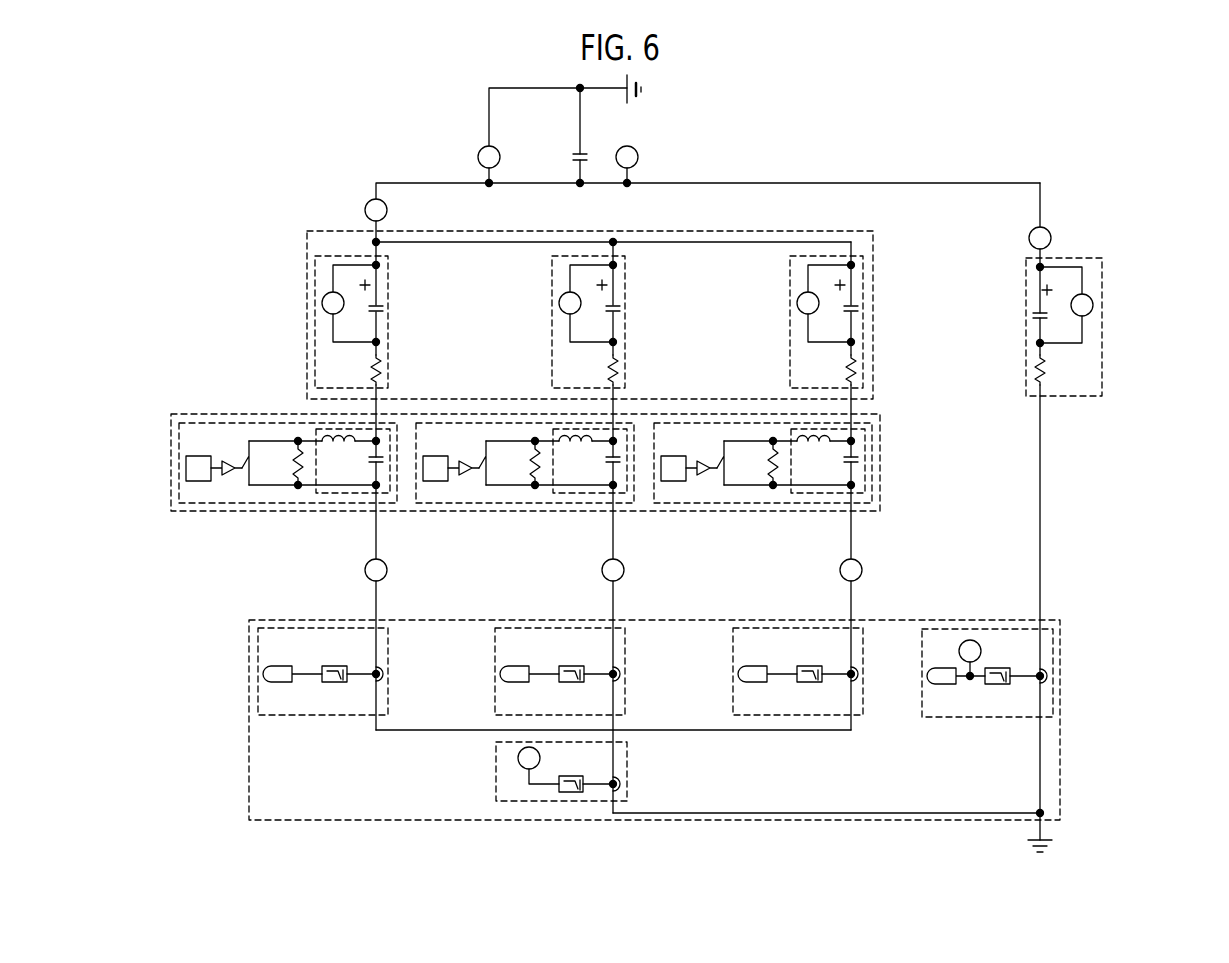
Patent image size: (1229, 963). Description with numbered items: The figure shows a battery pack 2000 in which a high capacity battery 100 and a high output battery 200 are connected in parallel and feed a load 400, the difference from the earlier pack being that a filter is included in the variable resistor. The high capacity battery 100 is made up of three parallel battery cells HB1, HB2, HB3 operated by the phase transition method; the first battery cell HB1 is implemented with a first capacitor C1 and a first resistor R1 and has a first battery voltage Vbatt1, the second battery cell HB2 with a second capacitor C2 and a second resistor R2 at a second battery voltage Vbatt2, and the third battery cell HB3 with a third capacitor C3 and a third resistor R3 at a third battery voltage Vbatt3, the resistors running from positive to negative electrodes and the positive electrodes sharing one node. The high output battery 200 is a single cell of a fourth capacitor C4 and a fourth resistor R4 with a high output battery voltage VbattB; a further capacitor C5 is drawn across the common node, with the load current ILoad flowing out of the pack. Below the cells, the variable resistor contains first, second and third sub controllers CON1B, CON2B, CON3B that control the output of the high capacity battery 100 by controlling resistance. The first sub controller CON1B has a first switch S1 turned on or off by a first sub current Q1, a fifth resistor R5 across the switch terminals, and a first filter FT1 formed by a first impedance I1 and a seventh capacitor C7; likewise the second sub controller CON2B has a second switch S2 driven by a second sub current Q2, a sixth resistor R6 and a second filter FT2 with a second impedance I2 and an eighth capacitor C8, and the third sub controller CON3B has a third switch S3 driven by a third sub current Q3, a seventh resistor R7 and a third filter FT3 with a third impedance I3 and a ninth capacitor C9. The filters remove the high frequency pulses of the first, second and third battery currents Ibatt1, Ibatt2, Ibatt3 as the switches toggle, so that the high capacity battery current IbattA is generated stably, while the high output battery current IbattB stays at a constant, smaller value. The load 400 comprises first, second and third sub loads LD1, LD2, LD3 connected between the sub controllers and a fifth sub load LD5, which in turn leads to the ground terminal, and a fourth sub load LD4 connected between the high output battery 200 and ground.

The battery pack 2000 is at (1120, 104).
The high capacity battery 100 is at (875, 276).
The high output battery 200 is at (1101, 327).
The load 400 is at (1062, 643).
The first battery cell HB1 is at (314, 322).
The second battery cell HB2 is at (551, 322).
The third battery cell HB3 is at (789, 322).
The first sub controller CON1B is at (288, 489).
The second sub controller CON2B is at (525, 489).
The third sub controller CON3B is at (763, 489).
The first filter FT1 is at (353, 492).
The second filter FT2 is at (590, 492).
The third filter FT3 is at (828, 492).
The first sub load LD1 is at (323, 651).
The second sub load LD2 is at (560, 651).
The third sub load LD3 is at (798, 651).
The fourth sub load LD4 is at (987, 652).
The fifth sub load LD5 is at (514, 798).
The first sub current Q1 is at (198, 468).
The second sub current Q2 is at (435, 468).
The third sub current Q3 is at (673, 468).
The first switch S1 is at (256, 463).
The second switch S2 is at (493, 463).
The third switch S3 is at (731, 463).
The first resistor R1 is at (364, 370).
The second resistor R2 is at (601, 370).
The third resistor R3 is at (839, 370).
The fourth resistor R4 is at (1053, 370).
The fifth resistor R5 is at (286, 463).
The sixth resistor R6 is at (523, 463).
The seventh resistor R7 is at (761, 463).
The first capacitor C1 is at (368, 319).
The second capacitor C2 is at (605, 319).
The third capacitor C3 is at (843, 319).
The fourth capacitor C4 is at (1049, 323).
The fifth capacitor C5 is at (570, 158).
The seventh capacitor C7 is at (366, 470).
The eighth capacitor C8 is at (603, 470).
The ninth capacitor C9 is at (841, 470).
The first impedance I1 is at (338, 452).
The second impedance I2 is at (575, 452).
The third impedance I3 is at (813, 452).
The first battery voltage Vbatt1 is at (322, 303).
The second battery voltage Vbatt2 is at (559, 303).
The third battery voltage Vbatt3 is at (797, 303).
The high output battery voltage VbattB is at (1094, 304).
The load current meter ILoad is at (510, 150).
The high capacity battery current IbattA is at (400, 210).
The high output battery current IbattB is at (1064, 231).
The first battery current Ibatt1 is at (400, 570).
The second battery current Ibatt2 is at (637, 570).
The third battery current Ibatt3 is at (875, 570).